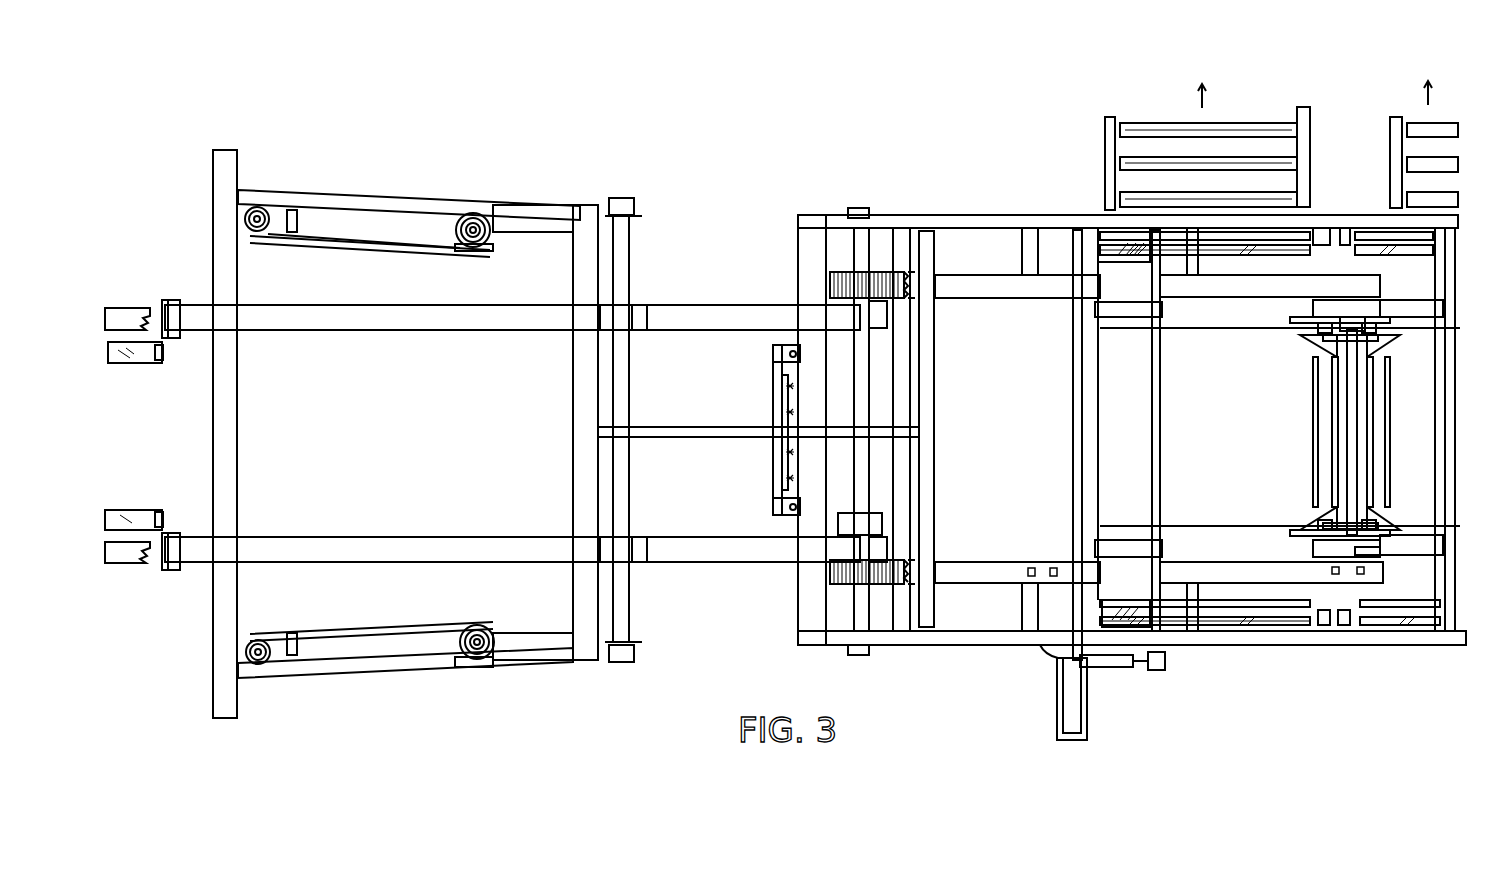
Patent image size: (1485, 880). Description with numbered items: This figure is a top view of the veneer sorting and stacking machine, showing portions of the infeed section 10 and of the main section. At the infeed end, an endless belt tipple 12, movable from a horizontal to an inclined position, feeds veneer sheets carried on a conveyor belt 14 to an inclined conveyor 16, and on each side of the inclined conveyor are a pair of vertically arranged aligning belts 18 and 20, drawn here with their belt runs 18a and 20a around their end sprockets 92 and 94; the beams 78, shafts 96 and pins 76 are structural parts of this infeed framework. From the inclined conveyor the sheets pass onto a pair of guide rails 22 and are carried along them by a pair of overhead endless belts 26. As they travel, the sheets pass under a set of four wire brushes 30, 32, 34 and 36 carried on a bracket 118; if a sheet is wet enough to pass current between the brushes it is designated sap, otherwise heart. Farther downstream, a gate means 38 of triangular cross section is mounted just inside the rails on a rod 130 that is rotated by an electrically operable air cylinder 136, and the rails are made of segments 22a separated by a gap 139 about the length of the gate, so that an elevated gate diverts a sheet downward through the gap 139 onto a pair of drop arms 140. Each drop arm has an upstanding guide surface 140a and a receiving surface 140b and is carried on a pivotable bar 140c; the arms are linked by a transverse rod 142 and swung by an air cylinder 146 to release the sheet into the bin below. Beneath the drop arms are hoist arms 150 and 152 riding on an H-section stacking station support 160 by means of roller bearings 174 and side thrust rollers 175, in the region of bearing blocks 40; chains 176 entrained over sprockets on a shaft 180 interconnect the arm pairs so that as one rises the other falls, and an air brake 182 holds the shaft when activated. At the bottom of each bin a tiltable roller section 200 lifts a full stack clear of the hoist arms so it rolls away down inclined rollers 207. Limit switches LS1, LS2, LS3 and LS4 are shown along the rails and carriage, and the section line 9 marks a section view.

The infeed section 10 is at (321, 183).
The endless belt tipple 12 is at (132, 376).
The conveyor belt 14 is at (128, 306).
The inclined conveyor 16 is at (158, 303).
The aligning belt 18 is at (465, 622).
The lower conveyor belt 18a is at (372, 627).
The aligning belt 20 is at (468, 248).
The upper conveyor belt 20a is at (392, 251).
The guide rail 22 is at (1003, 290).
The rail segment 22a is at (972, 290).
The overhead endless belt 26 is at (840, 288).
The wire brush 30 is at (782, 478).
The wire brush 32 is at (784, 453).
The wire brush 34 is at (784, 413).
The wire brush 36 is at (783, 385).
The gate means 38 is at (1103, 317).
The bearing block 40 is at (1417, 318).
The pin 76 is at (156, 362).
The beam 78 is at (493, 314).
The sprocket 92 is at (254, 234).
The sprocket 94 is at (462, 206).
The shaft 96 is at (633, 314).
The sensor bracket 118 is at (775, 397).
The rod 130 is at (1160, 415).
The air cylinder 136 is at (1108, 667).
The gap 139 is at (1117, 278).
The drop arm 140 is at (1105, 227).
The guide surface 140a is at (1237, 245).
The receiving surface 140b is at (1215, 245).
The pivotable bar 140c is at (1334, 223).
The transverse rod 142 is at (1073, 415).
The air cylinder 146 is at (1070, 685).
The hoist arm 150 is at (1178, 330).
The hoist arm 152 is at (1403, 518).
The stacking station support 160 is at (1313, 307).
The roller bearing 174 is at (1388, 317).
The side thrust roller 175 is at (1362, 317).
The chain 176 is at (1320, 340).
The shaft 180 is at (1358, 410).
The air brake 182 is at (1366, 554).
The tiltable roller section 200 is at (1253, 115).
The inclined roller 207 is at (1152, 127).
The section line 9 is at (1097, 265).
The limit switch LS1 is at (1028, 568).
The limit switch LS2 is at (1053, 568).
The limit switch LS3 is at (1332, 571).
The limit switch LS4 is at (1366, 574).